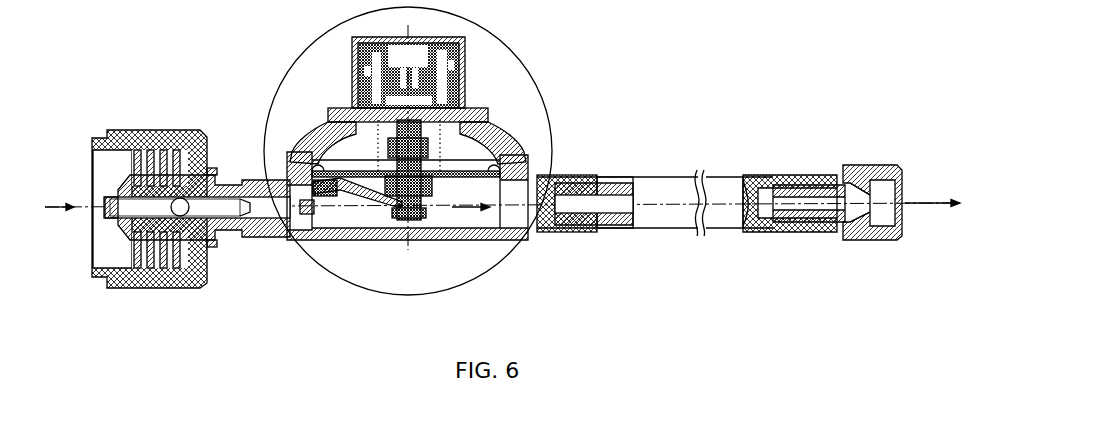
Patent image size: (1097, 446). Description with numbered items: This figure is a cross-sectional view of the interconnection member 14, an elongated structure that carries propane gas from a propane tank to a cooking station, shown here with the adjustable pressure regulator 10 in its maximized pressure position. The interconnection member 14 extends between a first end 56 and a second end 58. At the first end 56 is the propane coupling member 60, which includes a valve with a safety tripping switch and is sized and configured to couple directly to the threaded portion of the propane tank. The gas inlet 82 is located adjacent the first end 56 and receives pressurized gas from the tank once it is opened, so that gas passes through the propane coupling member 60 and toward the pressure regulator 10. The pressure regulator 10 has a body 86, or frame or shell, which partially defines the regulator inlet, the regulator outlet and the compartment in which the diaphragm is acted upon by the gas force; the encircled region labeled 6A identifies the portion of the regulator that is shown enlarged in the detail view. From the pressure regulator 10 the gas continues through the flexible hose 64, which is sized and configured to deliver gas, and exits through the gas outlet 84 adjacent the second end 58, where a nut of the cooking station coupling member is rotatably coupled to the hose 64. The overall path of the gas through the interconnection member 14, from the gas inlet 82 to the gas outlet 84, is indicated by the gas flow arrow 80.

The pressure regulator 10 is at (490, 130).
The interconnection member 14 is at (727, 147).
The first end 56 is at (92, 140).
The second end 58 is at (904, 172).
The propane coupling member 60 is at (157, 130).
The hose 64 is at (664, 176).
The gas flow arrow 80 is at (58, 212).
The gas inlet 82 is at (104, 205).
The gas outlet 84 is at (862, 185).
The body 86 is at (323, 138).
The detail view indicator 6A is at (507, 43).